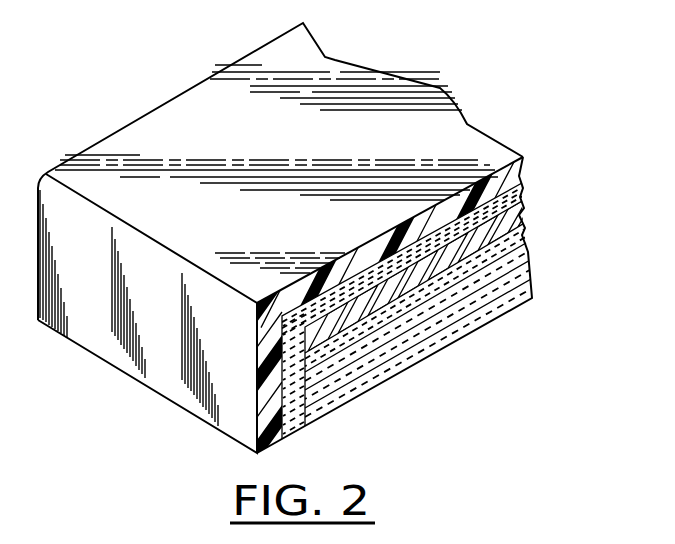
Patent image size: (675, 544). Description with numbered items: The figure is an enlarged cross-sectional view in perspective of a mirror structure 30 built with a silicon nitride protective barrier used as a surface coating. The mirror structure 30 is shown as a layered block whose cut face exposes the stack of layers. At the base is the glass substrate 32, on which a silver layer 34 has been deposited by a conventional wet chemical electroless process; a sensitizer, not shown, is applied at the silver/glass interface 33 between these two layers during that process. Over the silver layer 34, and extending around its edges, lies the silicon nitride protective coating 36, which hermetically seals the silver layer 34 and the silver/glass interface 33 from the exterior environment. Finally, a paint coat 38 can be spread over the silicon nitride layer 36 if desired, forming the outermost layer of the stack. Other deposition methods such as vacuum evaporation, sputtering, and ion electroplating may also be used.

The mirror structure 30 is at (470, 104).
The glass substrate 32 is at (528, 257).
The silver/glass interface 33 is at (513, 233).
The silver layer 34 is at (522, 210).
The silicon nitride protective coating 36 is at (520, 190).
The paint coat 38 is at (520, 160).